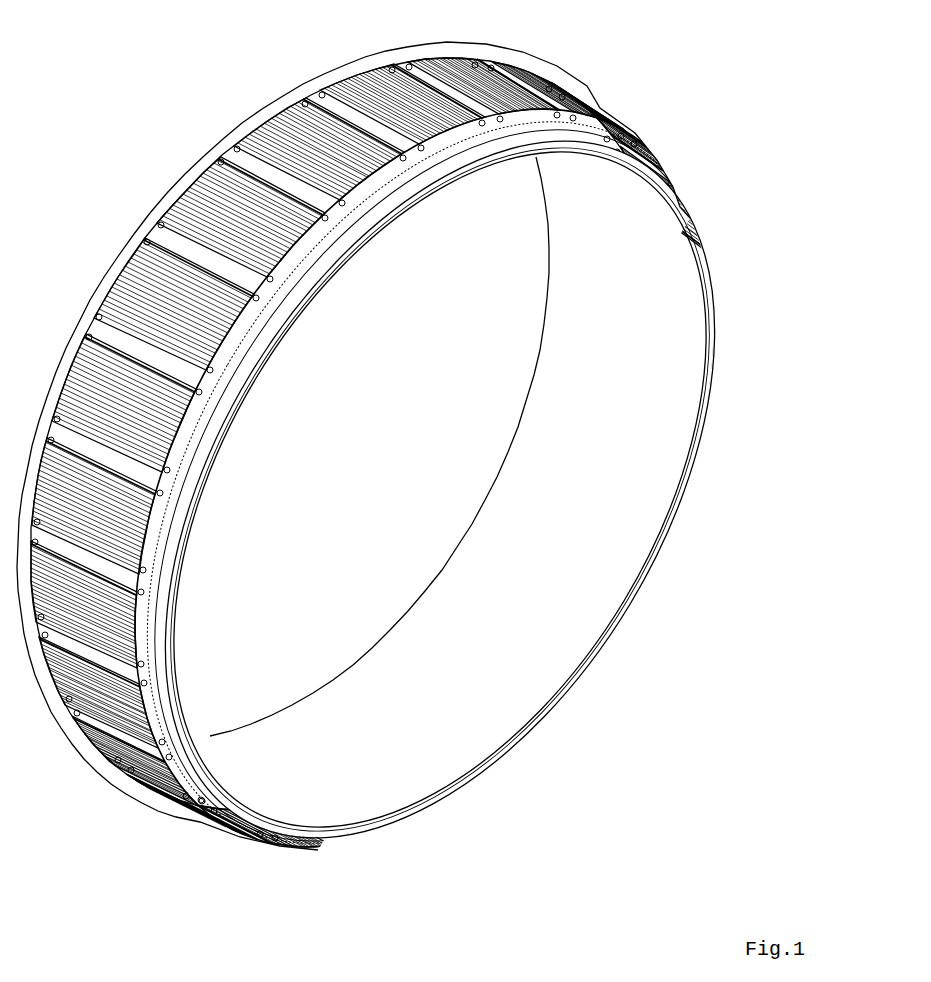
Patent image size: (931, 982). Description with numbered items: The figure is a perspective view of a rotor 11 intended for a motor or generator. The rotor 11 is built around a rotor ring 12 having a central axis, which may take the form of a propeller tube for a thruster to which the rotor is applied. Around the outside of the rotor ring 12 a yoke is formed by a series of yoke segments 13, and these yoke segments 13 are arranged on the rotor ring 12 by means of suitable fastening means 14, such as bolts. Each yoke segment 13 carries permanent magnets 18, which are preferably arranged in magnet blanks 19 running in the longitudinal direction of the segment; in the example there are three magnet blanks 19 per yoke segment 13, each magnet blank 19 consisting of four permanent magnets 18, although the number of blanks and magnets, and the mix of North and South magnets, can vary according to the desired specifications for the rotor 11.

The rotor 11 is at (197, 133).
The rotor ring 12 is at (712, 323).
The yoke segment 13 is at (424, 477).
The fastening means 14 is at (431, 482).
The permanent magnet 18 is at (368, 451).
The magnet blank 19 is at (368, 452).